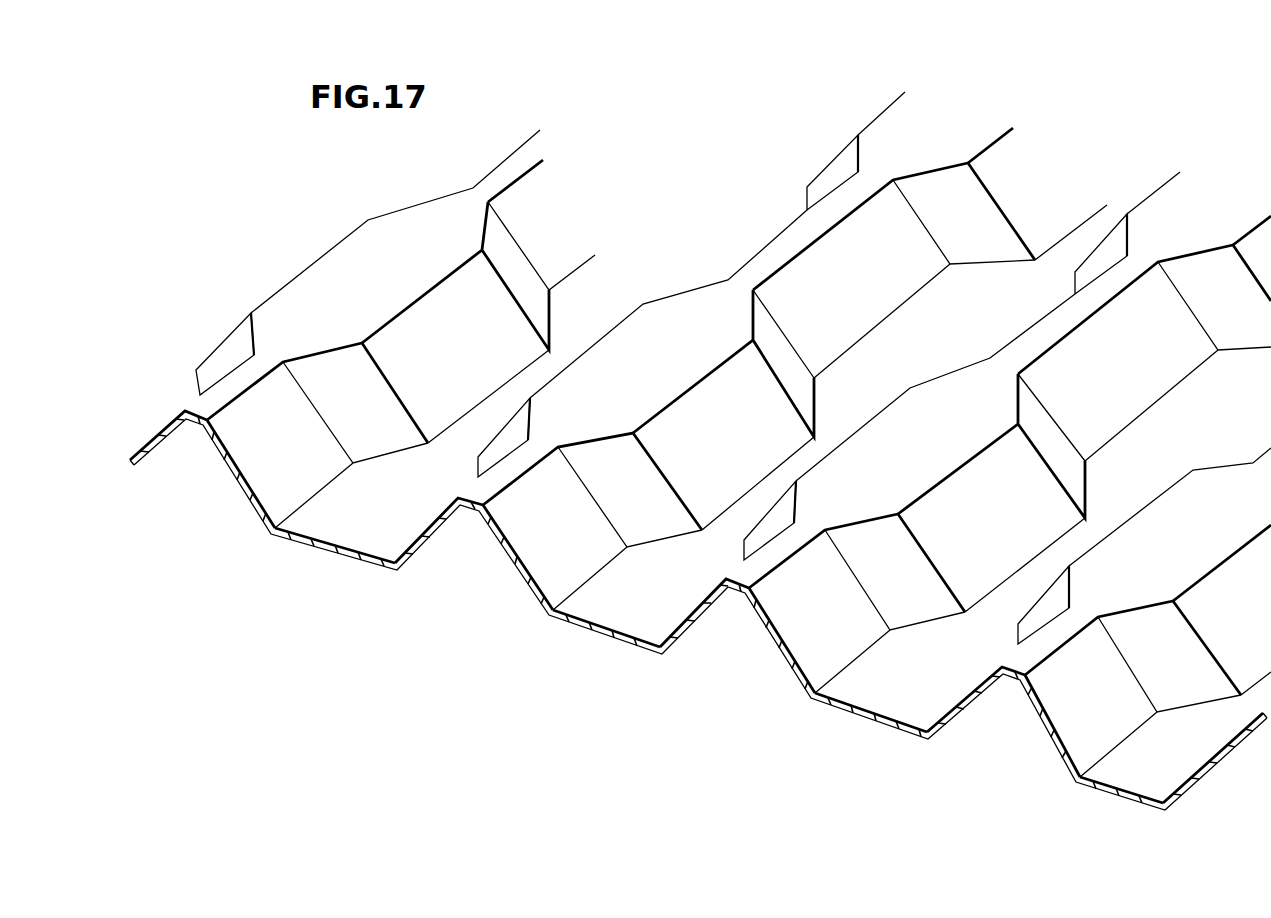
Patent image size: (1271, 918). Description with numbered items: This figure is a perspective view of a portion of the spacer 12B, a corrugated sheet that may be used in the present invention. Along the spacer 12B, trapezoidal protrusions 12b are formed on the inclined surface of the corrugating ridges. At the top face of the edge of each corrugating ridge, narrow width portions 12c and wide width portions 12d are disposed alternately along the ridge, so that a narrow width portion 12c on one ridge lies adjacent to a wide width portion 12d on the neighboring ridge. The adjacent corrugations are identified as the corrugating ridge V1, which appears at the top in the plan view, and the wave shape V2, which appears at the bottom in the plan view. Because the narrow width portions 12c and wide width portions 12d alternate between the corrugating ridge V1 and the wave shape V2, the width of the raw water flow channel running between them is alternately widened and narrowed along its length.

The spacer 12B is at (385, 200).
The trapezoidal protrusion 12b is at (278, 296).
The narrow width portion 12c is at (227, 391).
The wide width portion 12d is at (335, 278).
The corrugating ridge V1 is at (197, 432).
The wave shape V2 is at (307, 554).